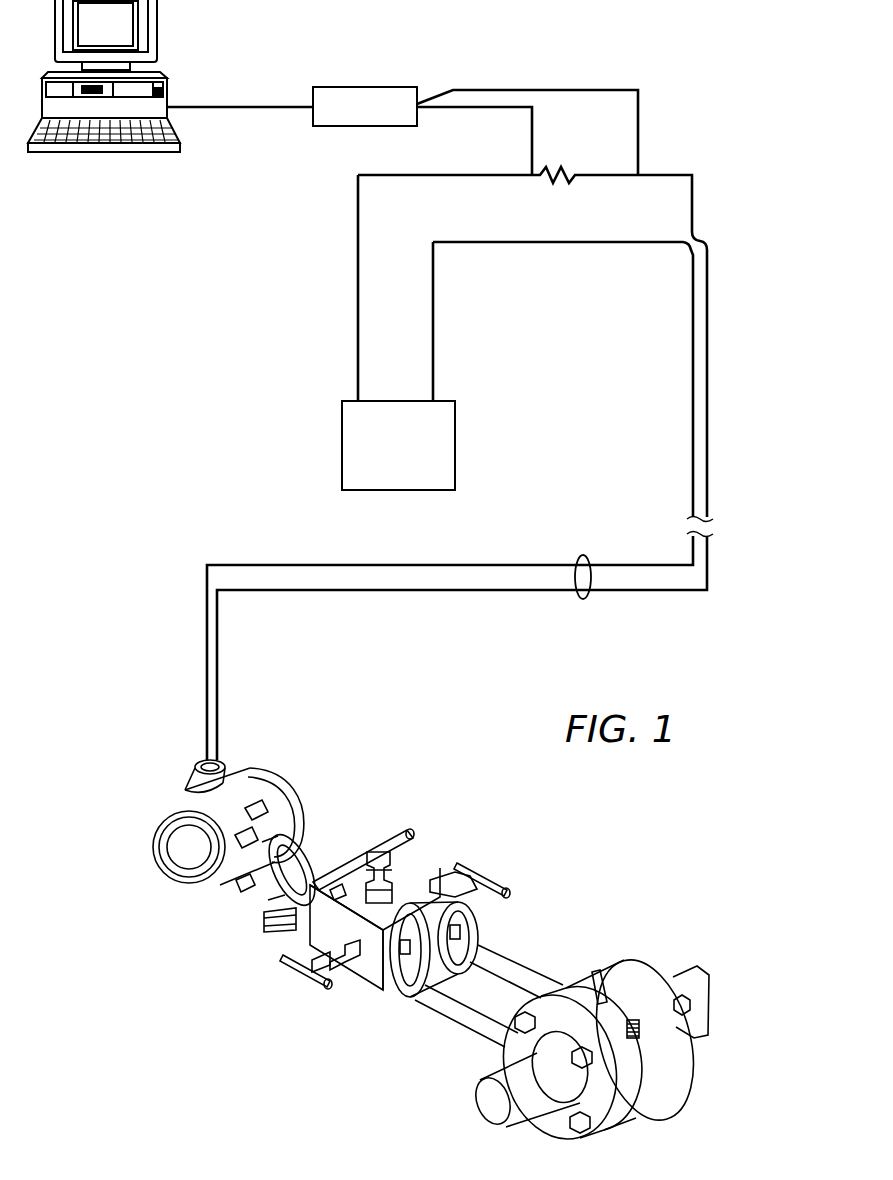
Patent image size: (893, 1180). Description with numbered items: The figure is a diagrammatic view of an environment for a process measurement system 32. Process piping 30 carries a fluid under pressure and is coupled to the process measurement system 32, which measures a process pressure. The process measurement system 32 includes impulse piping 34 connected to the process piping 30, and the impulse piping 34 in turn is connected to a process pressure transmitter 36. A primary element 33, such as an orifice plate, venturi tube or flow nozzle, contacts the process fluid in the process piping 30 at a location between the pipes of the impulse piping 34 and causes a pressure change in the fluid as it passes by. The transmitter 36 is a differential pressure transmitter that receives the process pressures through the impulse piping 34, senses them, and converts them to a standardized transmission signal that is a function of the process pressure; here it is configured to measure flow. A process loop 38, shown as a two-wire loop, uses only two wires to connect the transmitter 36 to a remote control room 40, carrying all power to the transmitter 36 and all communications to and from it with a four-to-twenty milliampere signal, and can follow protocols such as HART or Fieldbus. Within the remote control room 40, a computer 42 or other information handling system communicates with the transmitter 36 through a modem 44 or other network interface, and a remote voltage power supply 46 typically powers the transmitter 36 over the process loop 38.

The process piping 30 is at (697, 1028).
The process measurement system 32 is at (534, 898).
The primary element 33 is at (638, 1079).
The impulse piping 34 is at (520, 960).
The process pressure transmitter 36 is at (282, 771).
The process loop 38 is at (583, 599).
The remote control room 40 is at (262, 291).
The computer 42 is at (165, 74).
The modem 44 is at (345, 87).
The remote voltage power supply 46 is at (385, 490).